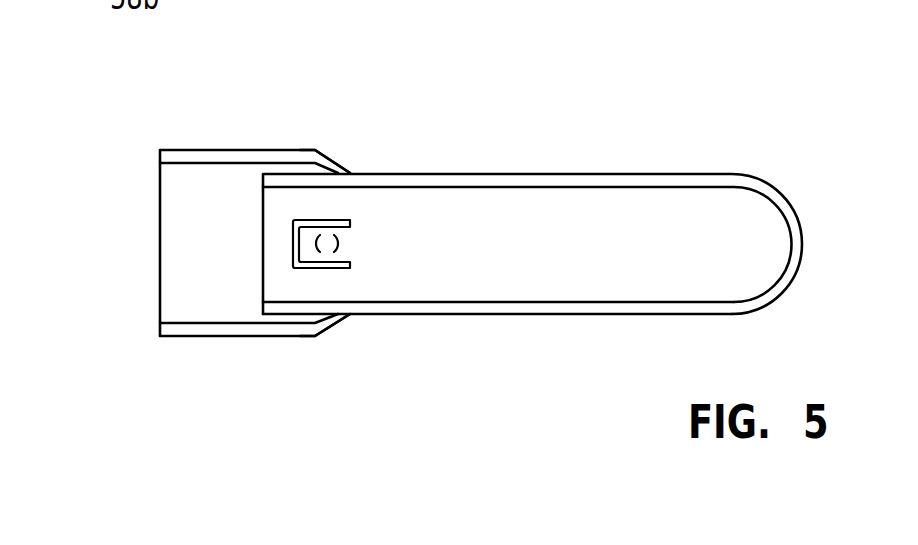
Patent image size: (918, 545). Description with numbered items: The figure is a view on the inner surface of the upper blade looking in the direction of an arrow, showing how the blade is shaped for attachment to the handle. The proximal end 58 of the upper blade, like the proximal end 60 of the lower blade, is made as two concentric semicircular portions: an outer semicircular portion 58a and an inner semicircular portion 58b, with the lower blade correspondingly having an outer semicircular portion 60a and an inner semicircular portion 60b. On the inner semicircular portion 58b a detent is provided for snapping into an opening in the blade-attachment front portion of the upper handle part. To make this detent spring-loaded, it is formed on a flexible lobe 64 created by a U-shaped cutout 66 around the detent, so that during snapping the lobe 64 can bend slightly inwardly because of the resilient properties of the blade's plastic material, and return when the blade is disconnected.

The proximal end 58 is at (235, 151).
The outer semicircular portion 58a is at (265, 157).
The inner semicircular portion 58b is at (319, 178).
The proximal end 60 is at (195, 337).
The outer semicircular portion 60a is at (298, 338).
The inner semicircular portion 60b is at (282, 307).
The flexible lobe 64 is at (301, 252).
The U-shaped cutout 66 is at (319, 262).